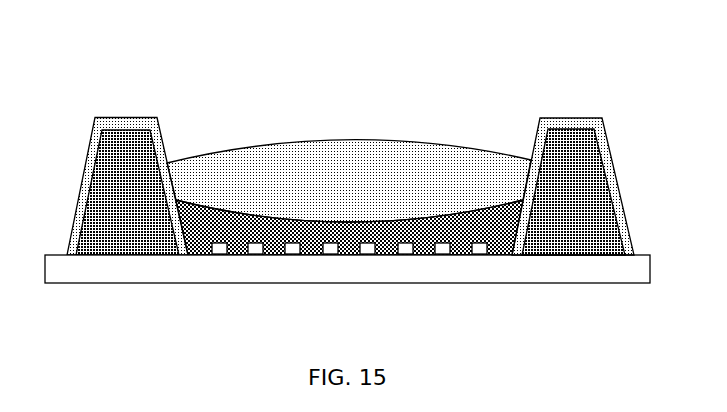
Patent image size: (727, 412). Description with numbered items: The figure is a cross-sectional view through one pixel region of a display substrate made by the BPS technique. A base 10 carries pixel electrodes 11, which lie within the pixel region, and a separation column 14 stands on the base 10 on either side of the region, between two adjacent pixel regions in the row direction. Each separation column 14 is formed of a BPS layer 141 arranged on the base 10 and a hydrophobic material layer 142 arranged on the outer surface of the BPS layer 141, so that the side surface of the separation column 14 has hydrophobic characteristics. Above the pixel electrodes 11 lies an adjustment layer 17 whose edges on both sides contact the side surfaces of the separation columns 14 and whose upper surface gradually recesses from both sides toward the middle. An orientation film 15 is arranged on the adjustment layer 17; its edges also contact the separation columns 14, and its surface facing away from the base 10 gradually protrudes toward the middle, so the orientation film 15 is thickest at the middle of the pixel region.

The base 10 is at (247, 272).
The pixel electrode 11 is at (367, 247).
The separation column 14 is at (567, 147).
The BPS layer 141 is at (547, 122).
The hydrophobic material layer 142 is at (587, 123).
The orientation film 15 is at (304, 163).
The adjustment layer 17 is at (202, 230).